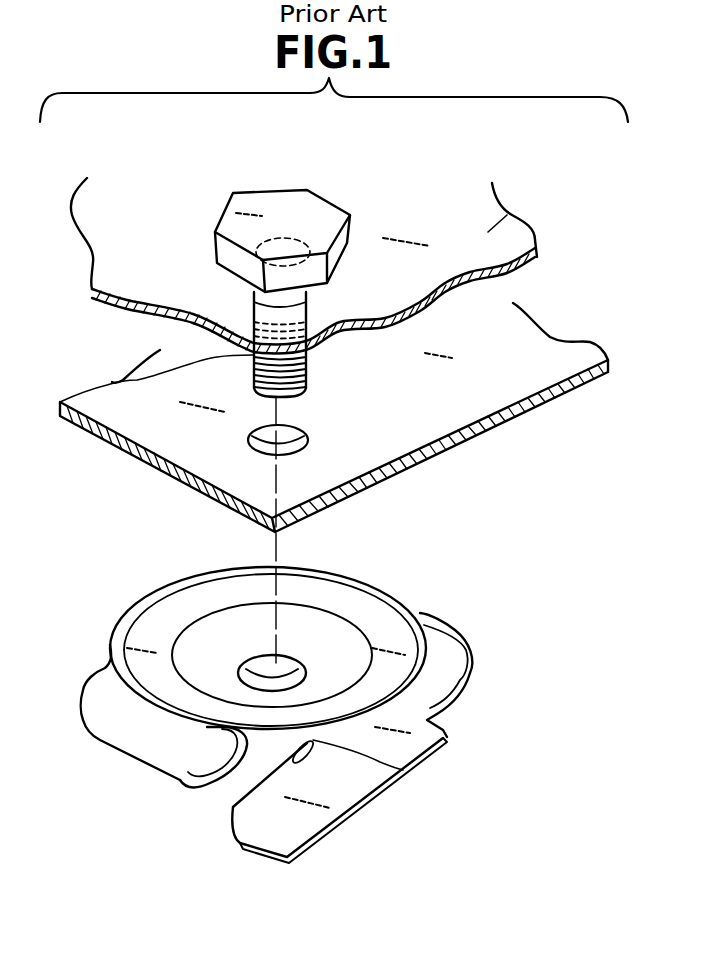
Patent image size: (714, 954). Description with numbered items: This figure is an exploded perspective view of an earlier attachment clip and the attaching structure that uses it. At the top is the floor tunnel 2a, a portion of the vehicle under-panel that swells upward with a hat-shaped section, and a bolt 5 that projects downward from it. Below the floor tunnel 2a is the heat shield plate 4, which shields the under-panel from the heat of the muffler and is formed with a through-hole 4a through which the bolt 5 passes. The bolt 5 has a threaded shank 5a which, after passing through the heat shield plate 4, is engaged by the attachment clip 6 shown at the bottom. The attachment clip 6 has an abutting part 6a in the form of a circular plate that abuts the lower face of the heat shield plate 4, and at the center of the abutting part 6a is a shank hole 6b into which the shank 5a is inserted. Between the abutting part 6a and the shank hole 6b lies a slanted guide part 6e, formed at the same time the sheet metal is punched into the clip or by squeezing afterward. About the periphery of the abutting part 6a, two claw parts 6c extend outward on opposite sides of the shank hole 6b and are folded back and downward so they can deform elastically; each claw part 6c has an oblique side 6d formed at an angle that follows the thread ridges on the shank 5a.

The bolt 5 is at (222, 186).
The shank 5a is at (112, 382).
The floor tunnel 2a is at (507, 216).
The heat shield plate 4 is at (448, 410).
The through-hole 4a is at (297, 428).
The attachment clip 6 is at (492, 620).
The abutting part 6a is at (370, 607).
The shank hole 6b is at (290, 657).
The claw part 6c is at (140, 745).
The oblique side 6d is at (245, 757).
The slanted guide part 6e is at (205, 630).